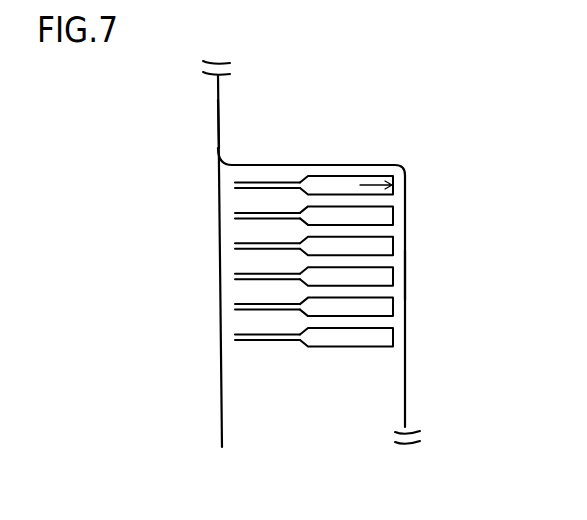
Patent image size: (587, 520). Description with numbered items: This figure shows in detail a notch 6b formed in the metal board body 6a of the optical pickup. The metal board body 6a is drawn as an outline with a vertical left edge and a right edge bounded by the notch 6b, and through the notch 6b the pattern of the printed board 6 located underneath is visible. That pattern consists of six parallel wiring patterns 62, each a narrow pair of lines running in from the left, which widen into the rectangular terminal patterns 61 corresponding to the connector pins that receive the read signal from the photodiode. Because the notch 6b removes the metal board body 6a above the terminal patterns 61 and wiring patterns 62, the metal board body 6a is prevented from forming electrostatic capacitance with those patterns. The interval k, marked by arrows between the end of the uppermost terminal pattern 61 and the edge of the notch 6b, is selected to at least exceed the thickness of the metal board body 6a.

The printed board 6 is at (234, 365).
The metal board body 6a is at (232, 138).
The notch 6b is at (407, 280).
The terminal patterns 61 is at (330, 186).
The wiring patterns 62 is at (271, 186).
The interval k is at (416, 189).